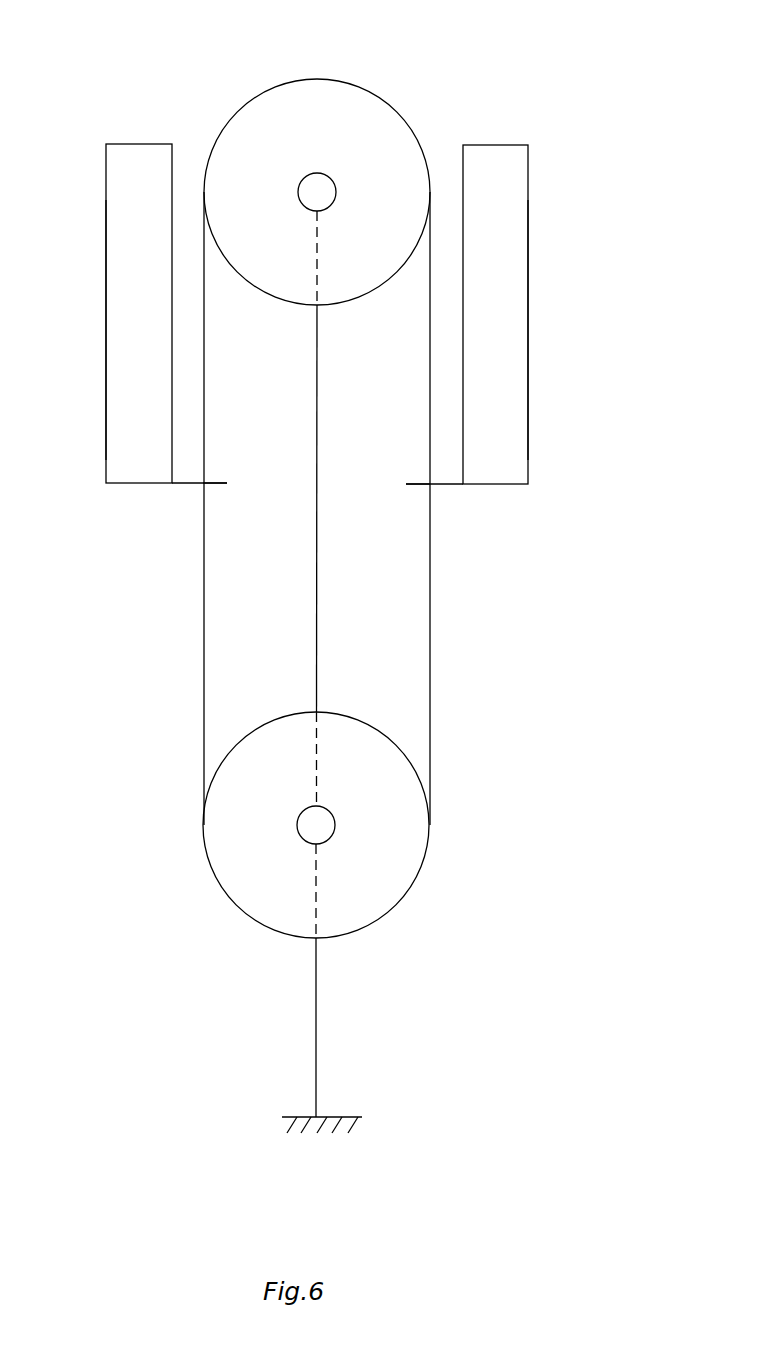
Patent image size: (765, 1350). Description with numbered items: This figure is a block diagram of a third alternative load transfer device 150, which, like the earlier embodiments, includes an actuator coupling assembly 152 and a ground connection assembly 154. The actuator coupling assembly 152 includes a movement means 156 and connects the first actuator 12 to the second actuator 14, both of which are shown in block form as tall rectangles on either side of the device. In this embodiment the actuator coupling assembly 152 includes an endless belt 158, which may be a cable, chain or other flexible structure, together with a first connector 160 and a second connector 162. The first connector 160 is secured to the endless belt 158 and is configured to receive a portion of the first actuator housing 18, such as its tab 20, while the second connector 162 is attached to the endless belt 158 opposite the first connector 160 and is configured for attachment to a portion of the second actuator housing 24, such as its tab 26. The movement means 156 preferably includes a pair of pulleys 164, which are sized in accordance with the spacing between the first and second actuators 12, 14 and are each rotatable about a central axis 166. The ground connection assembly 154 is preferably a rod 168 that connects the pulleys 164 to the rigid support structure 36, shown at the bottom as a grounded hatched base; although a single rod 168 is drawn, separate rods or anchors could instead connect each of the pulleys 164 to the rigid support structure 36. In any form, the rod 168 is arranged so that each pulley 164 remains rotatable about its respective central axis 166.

The load transfer device 150 is at (211, 27).
The first actuator 12 is at (106, 270).
The second actuator 14 is at (528, 292).
The first actuator housing 18 is at (118, 406).
The tab 20 is at (188, 484).
The second actuator housing 24 is at (518, 360).
The tab 26 is at (443, 486).
The rigid support structure 36 is at (362, 1116).
The actuator coupling assembly 152 is at (278, 300).
The ground connection assembly 154 is at (304, 1022).
The movement means 156 is at (322, 170).
The endless belt 158 is at (430, 648).
The first connector 160 is at (264, 474).
The second connector 162 is at (420, 483).
The pulleys 164 is at (362, 112).
The central axis 166 is at (332, 203).
The rod 168 is at (320, 622).